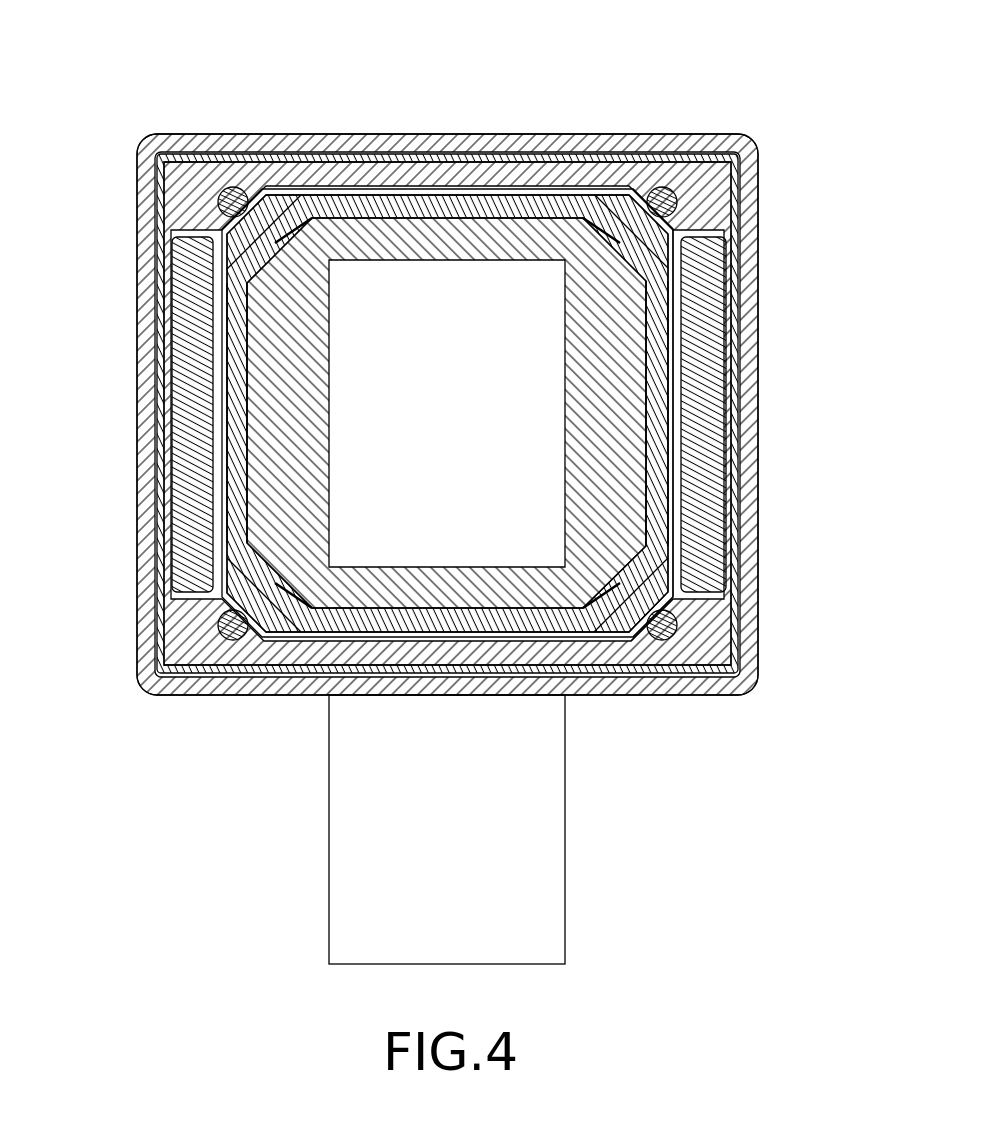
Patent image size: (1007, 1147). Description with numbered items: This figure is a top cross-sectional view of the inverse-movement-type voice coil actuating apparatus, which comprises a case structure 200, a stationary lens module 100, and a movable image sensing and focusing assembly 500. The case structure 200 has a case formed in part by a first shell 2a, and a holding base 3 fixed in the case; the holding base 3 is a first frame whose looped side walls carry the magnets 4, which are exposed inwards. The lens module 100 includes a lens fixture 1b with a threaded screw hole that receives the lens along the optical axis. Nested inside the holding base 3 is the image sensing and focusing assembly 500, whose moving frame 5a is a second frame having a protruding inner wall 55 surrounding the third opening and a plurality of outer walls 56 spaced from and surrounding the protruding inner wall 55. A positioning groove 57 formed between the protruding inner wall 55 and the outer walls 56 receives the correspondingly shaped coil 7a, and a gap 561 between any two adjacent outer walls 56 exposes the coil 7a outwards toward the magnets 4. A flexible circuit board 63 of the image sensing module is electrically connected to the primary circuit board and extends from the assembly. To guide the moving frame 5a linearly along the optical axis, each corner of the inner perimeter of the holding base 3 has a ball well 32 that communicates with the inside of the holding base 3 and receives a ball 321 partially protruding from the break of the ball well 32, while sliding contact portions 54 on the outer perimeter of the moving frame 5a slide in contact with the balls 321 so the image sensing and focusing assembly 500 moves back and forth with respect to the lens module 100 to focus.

The lens module 100 is at (445, 126).
The case structure 200 is at (184, 146).
The lens fixture 1b is at (262, 133).
The first shell 2a is at (220, 158).
The holding base 3 is at (342, 163).
The magnet 4 is at (717, 462).
The image sensing and focusing assembly 500 is at (577, 188).
The gap 561 is at (675, 382).
The positioning groove 57 is at (643, 232).
The ball well 32 is at (672, 608).
The ball 321 is at (677, 626).
The moving frame 5a is at (475, 235).
The coil 7a is at (662, 410).
The protruding inner wall 55 is at (610, 328).
The outer wall 56 is at (653, 189).
The sliding contact portion 54 is at (668, 641).
The flexible circuit board 63 is at (548, 885).